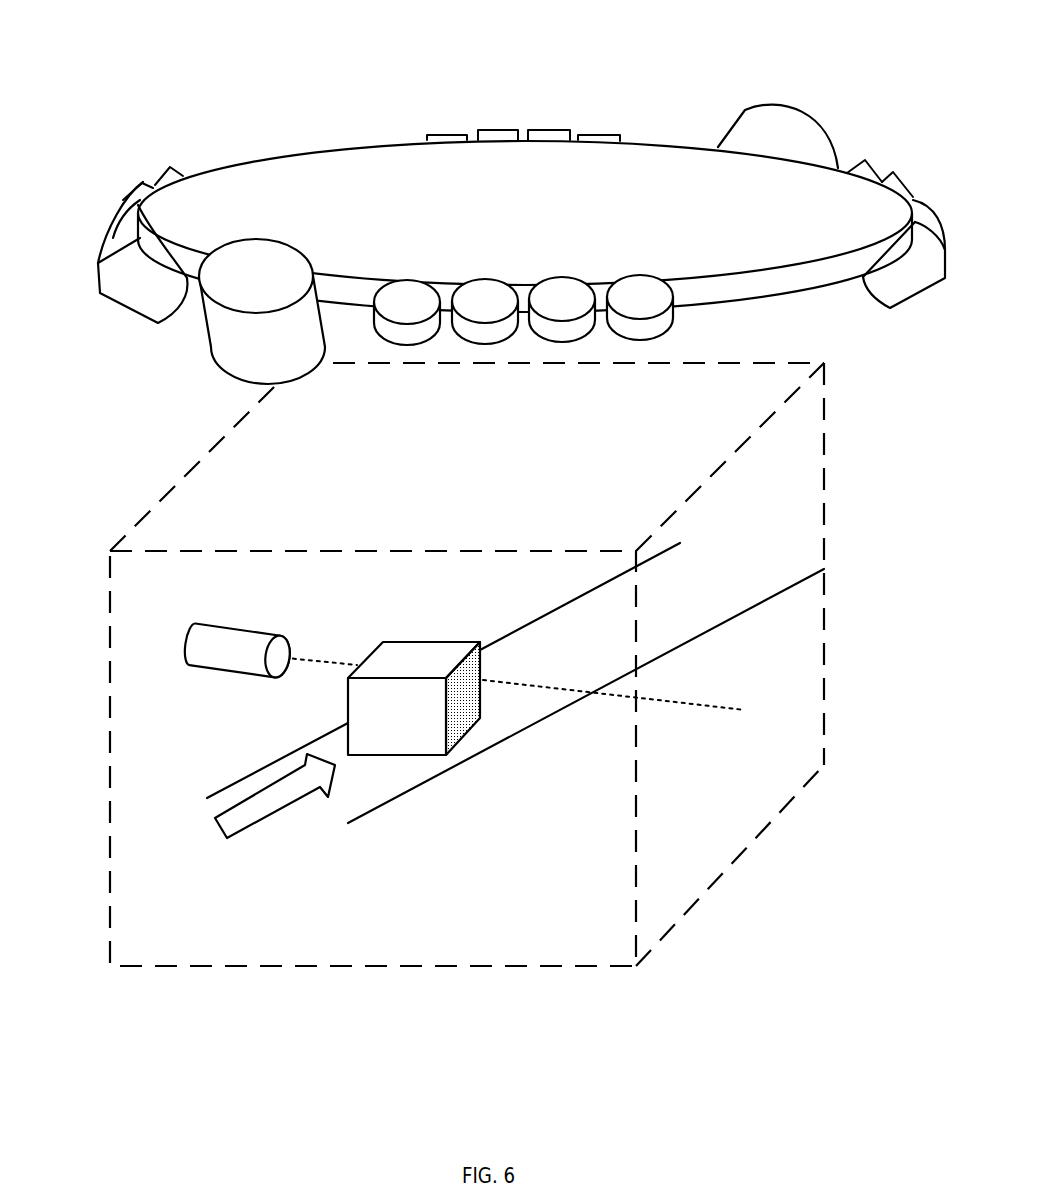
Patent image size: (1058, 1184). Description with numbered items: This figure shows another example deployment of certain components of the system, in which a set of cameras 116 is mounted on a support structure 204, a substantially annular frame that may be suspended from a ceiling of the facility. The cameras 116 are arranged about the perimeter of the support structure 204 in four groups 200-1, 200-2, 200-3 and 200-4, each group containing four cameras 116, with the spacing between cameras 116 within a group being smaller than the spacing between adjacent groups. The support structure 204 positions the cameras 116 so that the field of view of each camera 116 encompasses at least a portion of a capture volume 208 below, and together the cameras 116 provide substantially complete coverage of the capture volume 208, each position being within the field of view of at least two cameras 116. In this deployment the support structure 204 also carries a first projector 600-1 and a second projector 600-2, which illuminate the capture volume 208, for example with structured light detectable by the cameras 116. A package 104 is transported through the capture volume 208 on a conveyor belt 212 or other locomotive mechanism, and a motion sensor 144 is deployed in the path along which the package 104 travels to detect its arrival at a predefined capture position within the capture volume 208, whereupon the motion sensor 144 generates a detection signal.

The camera group 200-1 is at (114, 183).
The camera group 200-2 is at (517, 106).
The camera group 200-3 is at (899, 162).
The camera group 200-4 is at (680, 328).
The support structure 204 is at (683, 177).
The first projector 600-1 is at (280, 257).
The second projector 600-2 is at (768, 102).
The camera 116 is at (145, 297).
The motion sensor 144 is at (180, 647).
The package 104 is at (427, 723).
The conveyor belt 212 is at (383, 810).
The capture volume 208 is at (741, 861).